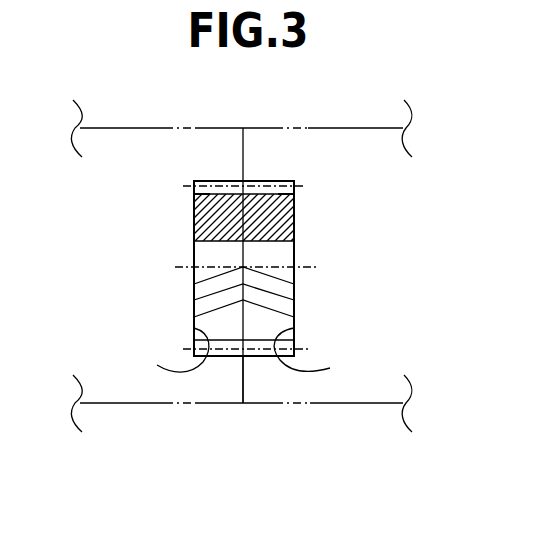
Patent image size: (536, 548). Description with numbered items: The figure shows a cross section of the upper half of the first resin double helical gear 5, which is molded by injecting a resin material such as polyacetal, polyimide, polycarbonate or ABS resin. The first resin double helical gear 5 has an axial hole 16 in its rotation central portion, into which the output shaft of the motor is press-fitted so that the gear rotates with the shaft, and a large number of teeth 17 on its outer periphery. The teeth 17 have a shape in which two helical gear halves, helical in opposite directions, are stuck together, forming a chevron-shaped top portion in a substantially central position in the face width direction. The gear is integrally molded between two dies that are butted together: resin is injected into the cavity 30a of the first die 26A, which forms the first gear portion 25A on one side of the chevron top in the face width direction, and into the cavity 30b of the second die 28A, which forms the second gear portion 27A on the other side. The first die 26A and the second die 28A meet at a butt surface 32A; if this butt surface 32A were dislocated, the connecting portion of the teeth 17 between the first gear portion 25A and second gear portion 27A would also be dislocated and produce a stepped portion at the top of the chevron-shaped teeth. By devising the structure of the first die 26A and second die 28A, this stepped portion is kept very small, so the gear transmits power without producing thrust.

The first resin double helical gear 5 is at (276, 165).
The axial hole 16 is at (267, 242).
The teeth 17 is at (228, 184).
The first gear portion 25A is at (207, 181).
The second gear portion 27A is at (276, 181).
The first die 26A is at (138, 403).
The second die 28A is at (333, 403).
The cavity 30a is at (160, 353).
The cavity 30b is at (323, 355).
The butt surface 32A is at (243, 388).